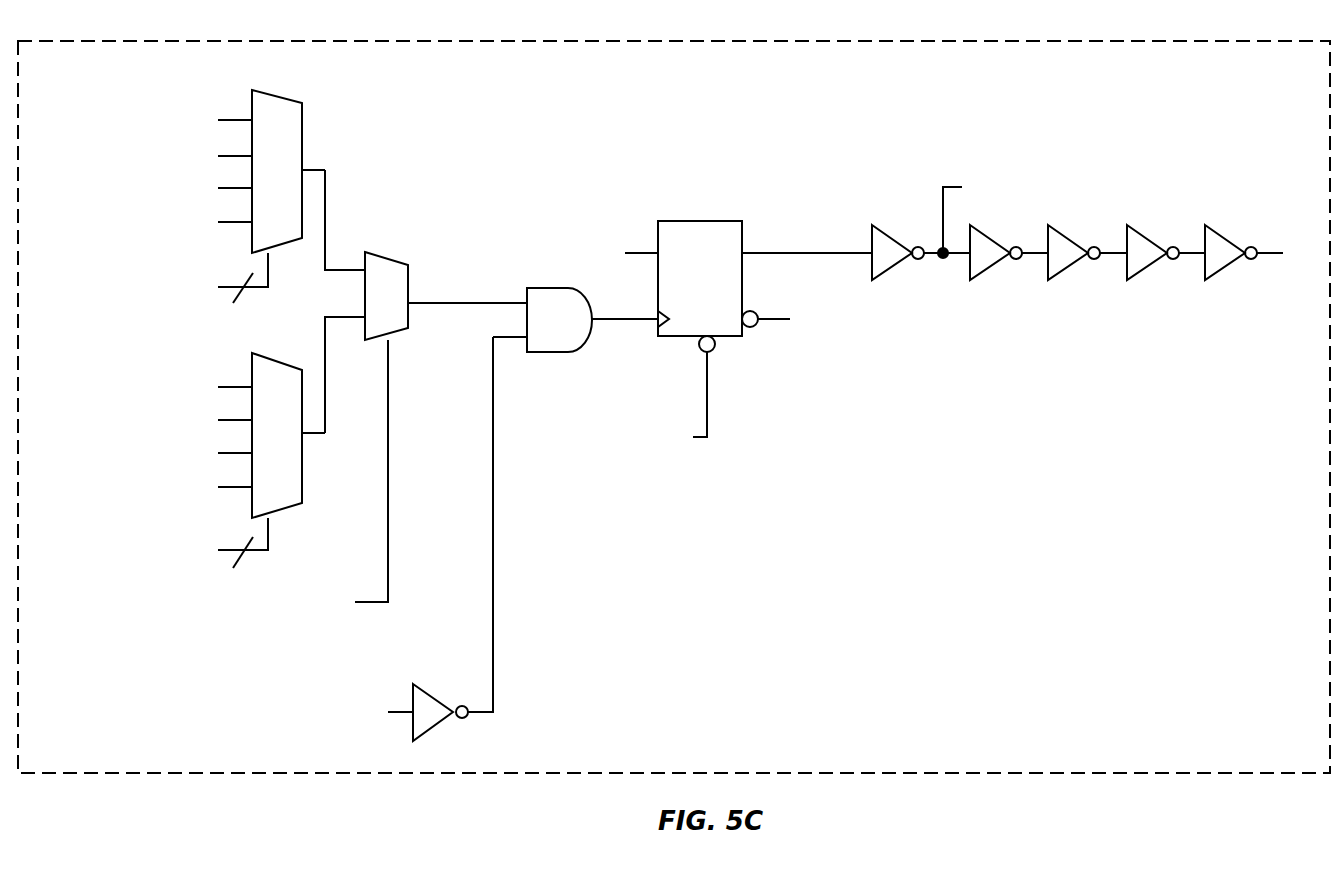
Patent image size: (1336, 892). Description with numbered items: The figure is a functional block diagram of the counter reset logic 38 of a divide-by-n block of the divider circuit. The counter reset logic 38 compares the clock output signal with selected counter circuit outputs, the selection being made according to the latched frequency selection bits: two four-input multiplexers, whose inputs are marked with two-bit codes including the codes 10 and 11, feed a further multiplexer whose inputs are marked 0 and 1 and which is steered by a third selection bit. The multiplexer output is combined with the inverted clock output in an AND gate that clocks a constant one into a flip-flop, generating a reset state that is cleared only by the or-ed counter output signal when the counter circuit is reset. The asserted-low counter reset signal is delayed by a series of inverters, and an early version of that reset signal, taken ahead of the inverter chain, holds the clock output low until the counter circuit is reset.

The counter reset logic 38 is at (1322, 82).
The multiplexer input 0 is at (353, 226).
The multiplexer input 1 is at (353, 370).
The multiplexer input 10 is at (229, 187).
The multiplexer input 11 is at (234, 221).